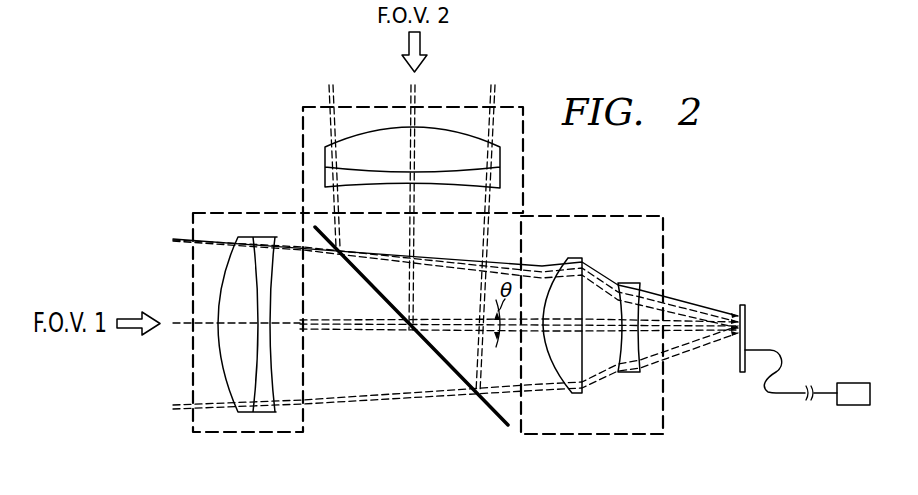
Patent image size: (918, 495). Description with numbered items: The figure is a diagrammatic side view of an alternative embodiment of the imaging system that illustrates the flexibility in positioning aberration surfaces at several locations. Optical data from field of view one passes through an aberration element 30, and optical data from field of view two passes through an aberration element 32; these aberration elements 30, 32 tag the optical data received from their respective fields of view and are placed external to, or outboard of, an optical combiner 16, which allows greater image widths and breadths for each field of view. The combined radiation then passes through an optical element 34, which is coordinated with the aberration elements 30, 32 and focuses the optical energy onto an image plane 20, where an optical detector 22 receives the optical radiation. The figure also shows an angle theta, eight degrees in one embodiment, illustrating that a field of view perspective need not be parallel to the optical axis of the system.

The optical combiner 16 is at (485, 403).
The image plane 20 is at (738, 360).
The optical detector 22 is at (853, 383).
The aberration element 30 is at (238, 212).
The aberration element 32 is at (453, 107).
The optical element 34 is at (610, 216).